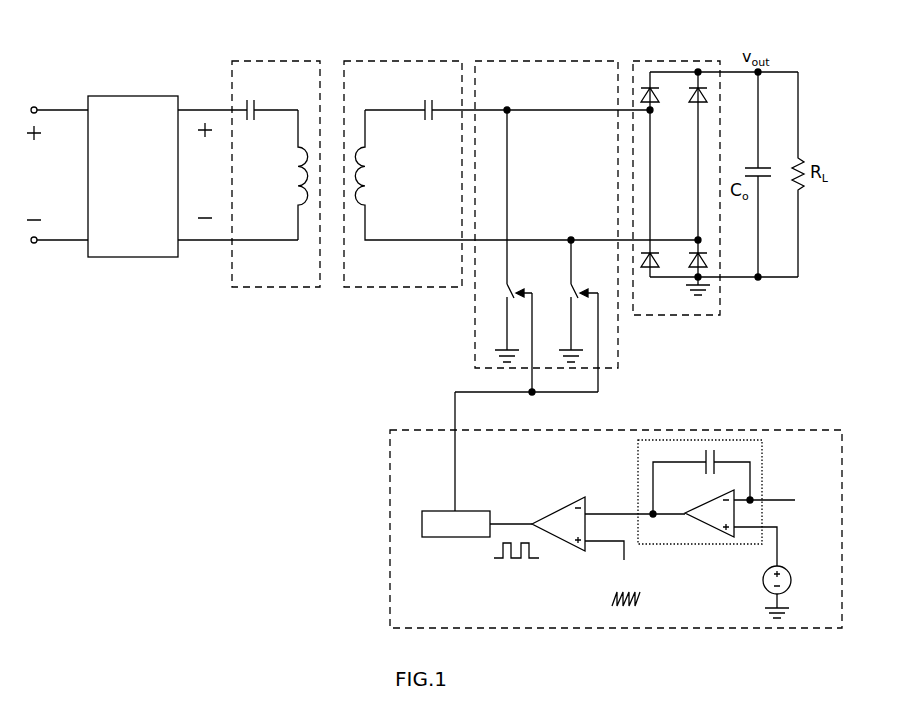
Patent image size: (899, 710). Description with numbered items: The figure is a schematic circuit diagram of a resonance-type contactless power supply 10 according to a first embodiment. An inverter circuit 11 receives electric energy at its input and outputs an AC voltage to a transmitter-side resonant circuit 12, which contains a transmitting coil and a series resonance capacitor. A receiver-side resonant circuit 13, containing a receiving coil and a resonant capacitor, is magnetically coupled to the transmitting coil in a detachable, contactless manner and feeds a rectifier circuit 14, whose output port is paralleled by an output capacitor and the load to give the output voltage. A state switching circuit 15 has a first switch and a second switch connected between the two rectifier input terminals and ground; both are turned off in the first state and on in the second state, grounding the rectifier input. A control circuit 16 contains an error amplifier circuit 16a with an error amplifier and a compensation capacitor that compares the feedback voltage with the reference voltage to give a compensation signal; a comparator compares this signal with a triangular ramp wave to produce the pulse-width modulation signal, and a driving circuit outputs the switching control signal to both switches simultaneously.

The resonance-type contactless power supply 10 is at (185, 509).
The inverter circuit 11 is at (118, 96).
The transmitter-side resonant circuit 12 is at (266, 61).
The receiver-side resonant circuit 13 is at (420, 61).
The rectifier circuit 14 is at (697, 61).
The state switching circuit 15 is at (557, 61).
The control circuit 16 is at (616, 507).
The error amplifier circuit 16a is at (762, 478).